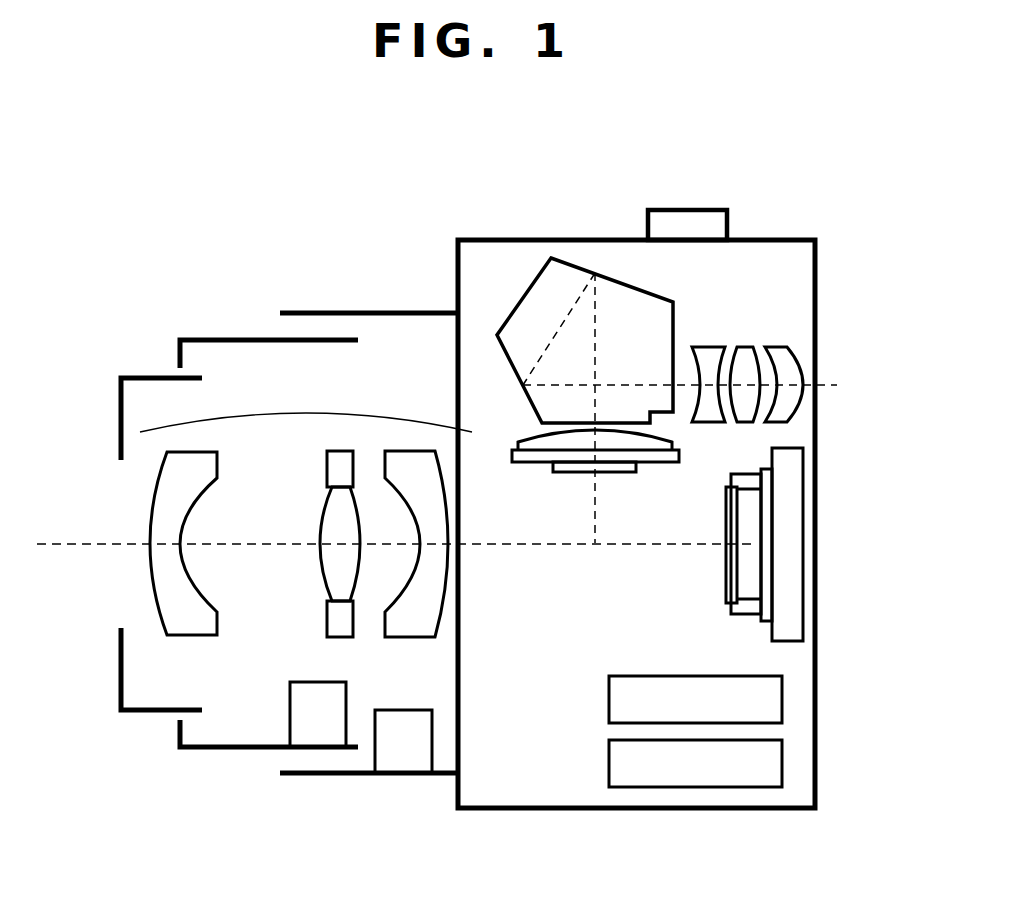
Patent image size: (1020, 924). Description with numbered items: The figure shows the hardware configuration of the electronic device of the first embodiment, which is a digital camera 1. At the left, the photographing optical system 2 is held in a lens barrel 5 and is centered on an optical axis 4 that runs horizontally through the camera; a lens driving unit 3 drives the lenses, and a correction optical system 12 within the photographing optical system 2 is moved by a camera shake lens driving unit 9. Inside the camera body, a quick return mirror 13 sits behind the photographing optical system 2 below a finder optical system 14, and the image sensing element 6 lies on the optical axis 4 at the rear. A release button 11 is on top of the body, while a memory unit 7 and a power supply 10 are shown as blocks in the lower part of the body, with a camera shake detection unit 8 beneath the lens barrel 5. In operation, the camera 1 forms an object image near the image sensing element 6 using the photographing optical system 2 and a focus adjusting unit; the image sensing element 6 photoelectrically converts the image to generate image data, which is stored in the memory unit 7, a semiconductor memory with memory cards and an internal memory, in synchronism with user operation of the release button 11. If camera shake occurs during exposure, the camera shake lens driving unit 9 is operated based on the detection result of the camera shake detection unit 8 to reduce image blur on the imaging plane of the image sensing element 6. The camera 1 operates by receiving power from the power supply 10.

The digital camera 1 is at (546, 240).
The photographing optical system 2 is at (273, 410).
The lens driving unit 3 is at (313, 740).
The optical axis 4 is at (62, 544).
The lens barrel 5 is at (150, 712).
The image sensing element 6 is at (805, 494).
The memory unit 7 is at (782, 690).
The camera shake detection unit 8 is at (401, 763).
The camera shake lens driving unit 9 is at (350, 451).
The power supply 10 is at (782, 757).
The release button 11 is at (663, 210).
The correction optical system 12 is at (330, 516).
The quick return mirror 13 is at (653, 448).
The finder optical system 14 is at (517, 300).